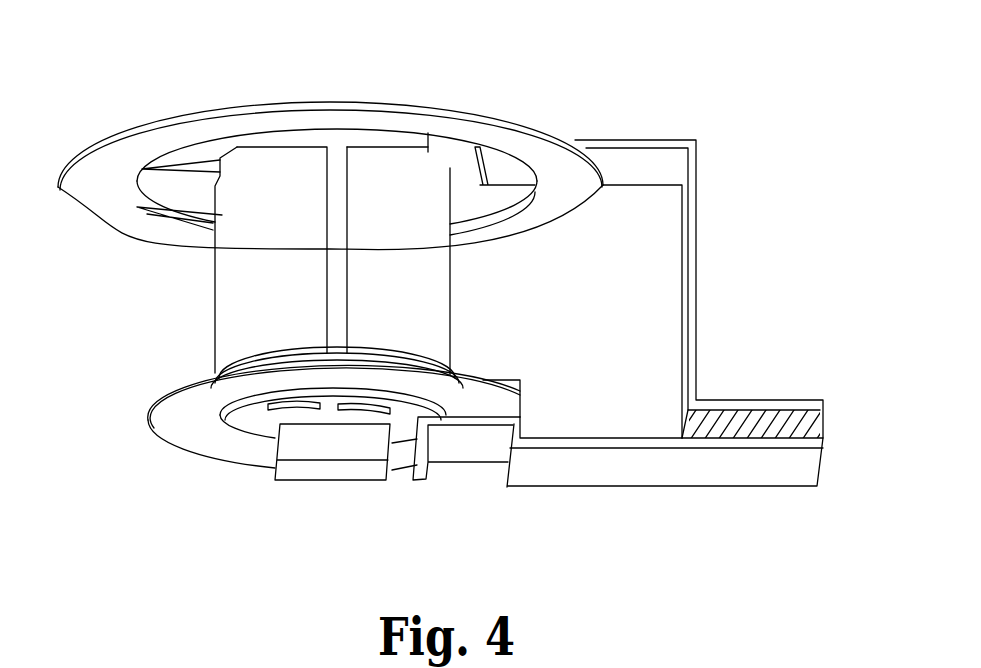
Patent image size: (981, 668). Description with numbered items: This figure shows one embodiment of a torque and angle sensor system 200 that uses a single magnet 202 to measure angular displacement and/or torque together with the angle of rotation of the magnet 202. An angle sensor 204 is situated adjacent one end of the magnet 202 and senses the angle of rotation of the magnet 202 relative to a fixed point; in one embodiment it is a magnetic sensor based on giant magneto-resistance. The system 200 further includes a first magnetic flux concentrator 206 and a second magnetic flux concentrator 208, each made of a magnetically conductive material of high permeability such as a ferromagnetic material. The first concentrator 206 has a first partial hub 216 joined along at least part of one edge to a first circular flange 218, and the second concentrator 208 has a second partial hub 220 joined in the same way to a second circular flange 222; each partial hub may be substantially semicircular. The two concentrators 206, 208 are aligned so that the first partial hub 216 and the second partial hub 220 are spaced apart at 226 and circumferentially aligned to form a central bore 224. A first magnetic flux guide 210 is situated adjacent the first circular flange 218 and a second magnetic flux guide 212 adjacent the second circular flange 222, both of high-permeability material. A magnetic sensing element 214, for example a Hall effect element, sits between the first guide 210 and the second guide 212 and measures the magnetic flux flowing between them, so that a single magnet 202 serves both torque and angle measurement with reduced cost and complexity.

The torque and angle sensor system 200 is at (736, 97).
The magnet 202 is at (333, 158).
The angle sensor 204 is at (333, 444).
The first magnetic flux concentrator 206 is at (190, 268).
The second magnetic flux concentrator 208 is at (484, 362).
The first magnetic flux guide 210 is at (647, 141).
The second magnetic flux guide 212 is at (735, 465).
The magnetic sensing element 214 is at (803, 418).
The first partial hub 216 is at (183, 222).
The first circular flange 218 is at (118, 157).
The second partial hub 220 is at (415, 193).
The second circular flange 222 is at (178, 432).
The central bore 224 is at (296, 401).
The spacing between partial hubs 226 is at (347, 185).